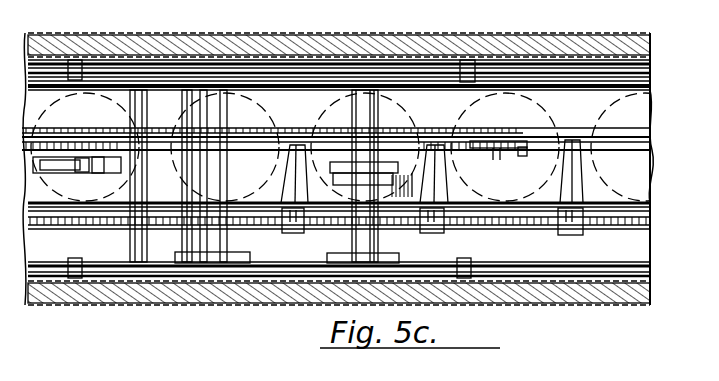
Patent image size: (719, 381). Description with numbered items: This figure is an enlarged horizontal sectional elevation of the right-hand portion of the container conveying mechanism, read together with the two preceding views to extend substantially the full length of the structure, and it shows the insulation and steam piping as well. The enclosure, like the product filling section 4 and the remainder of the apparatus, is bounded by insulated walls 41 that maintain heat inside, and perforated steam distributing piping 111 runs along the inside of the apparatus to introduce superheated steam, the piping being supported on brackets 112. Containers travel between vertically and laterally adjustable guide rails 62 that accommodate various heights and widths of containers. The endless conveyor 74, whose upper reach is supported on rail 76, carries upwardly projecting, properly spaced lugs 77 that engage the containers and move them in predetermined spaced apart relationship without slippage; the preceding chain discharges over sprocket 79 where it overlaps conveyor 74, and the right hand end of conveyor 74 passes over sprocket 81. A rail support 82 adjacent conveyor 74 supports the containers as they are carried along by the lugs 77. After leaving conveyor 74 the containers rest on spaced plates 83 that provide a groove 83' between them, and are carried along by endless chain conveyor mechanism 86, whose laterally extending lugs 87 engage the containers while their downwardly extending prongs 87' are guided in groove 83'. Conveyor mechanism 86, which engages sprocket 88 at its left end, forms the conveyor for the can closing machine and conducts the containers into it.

The product filling zone or section 4 is at (586, 304).
The insulated walls 41 is at (545, 36).
The guide rails 62 is at (38, 88).
The endless conveyor 74 is at (284, 150).
The rail 76 is at (28, 150).
The lugs 77 is at (140, 112).
The sprocket 79 is at (116, 190).
The sprocket 81 is at (500, 156).
The rail support 82 is at (236, 165).
The spaced plates 83 is at (360, 162).
The groove 83' is at (368, 158).
The endless chain conveyor mechanism 86 is at (647, 228).
The lugs 87 is at (523, 187).
The prongs 87' is at (493, 116).
The sprocket 88 is at (336, 228).
The perforated steam distributing piping 111 is at (320, 72).
The brackets 112 is at (463, 62).